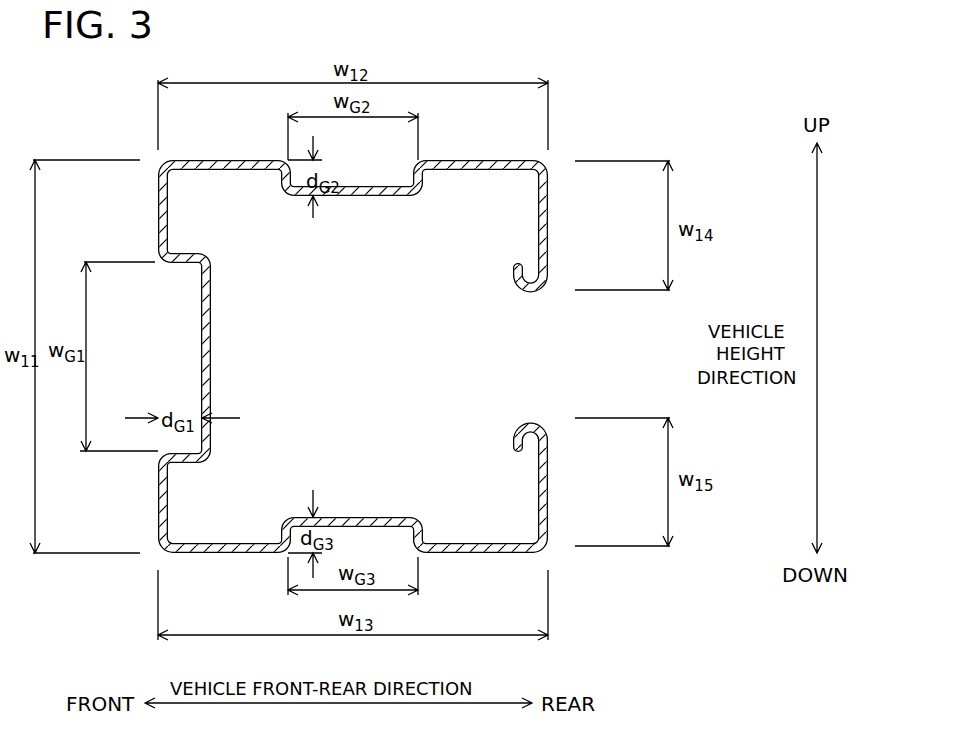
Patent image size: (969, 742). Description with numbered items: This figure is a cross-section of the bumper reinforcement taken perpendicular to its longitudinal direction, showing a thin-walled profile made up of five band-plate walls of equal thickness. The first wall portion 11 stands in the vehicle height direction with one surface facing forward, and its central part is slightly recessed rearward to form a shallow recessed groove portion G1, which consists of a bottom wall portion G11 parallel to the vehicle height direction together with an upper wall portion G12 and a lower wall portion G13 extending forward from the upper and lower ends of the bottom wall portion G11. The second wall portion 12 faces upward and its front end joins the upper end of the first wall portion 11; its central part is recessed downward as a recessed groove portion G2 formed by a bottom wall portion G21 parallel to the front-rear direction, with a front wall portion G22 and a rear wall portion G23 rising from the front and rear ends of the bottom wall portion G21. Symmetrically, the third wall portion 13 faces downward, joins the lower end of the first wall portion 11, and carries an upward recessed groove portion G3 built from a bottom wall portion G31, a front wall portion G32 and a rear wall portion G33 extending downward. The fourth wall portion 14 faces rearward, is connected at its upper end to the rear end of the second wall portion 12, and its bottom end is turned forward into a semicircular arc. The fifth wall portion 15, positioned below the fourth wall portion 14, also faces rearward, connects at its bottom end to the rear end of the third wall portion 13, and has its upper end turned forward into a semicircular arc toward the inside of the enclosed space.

The first wall portion 11 is at (184, 356).
The second wall portion 12 is at (353, 180).
The third wall portion 13 is at (353, 537).
The fourth wall portion 14 is at (549, 212).
The fifth wall portion 15 is at (549, 486).
The recessed groove portion G1 is at (226, 356).
The bottom wall portion G11 is at (212, 328).
The upper wall portion G12 is at (186, 256).
The lower wall portion G13 is at (184, 461).
The recessed groove portion G2 is at (361, 200).
The bottom wall portion G21 is at (356, 197).
The front wall portion G22 is at (284, 178).
The rear wall portion G23 is at (427, 176).
The recessed groove portion G3 is at (354, 514).
The bottom wall portion G31 is at (352, 515).
The front wall portion G32 is at (284, 538).
The rear wall portion G33 is at (426, 538).